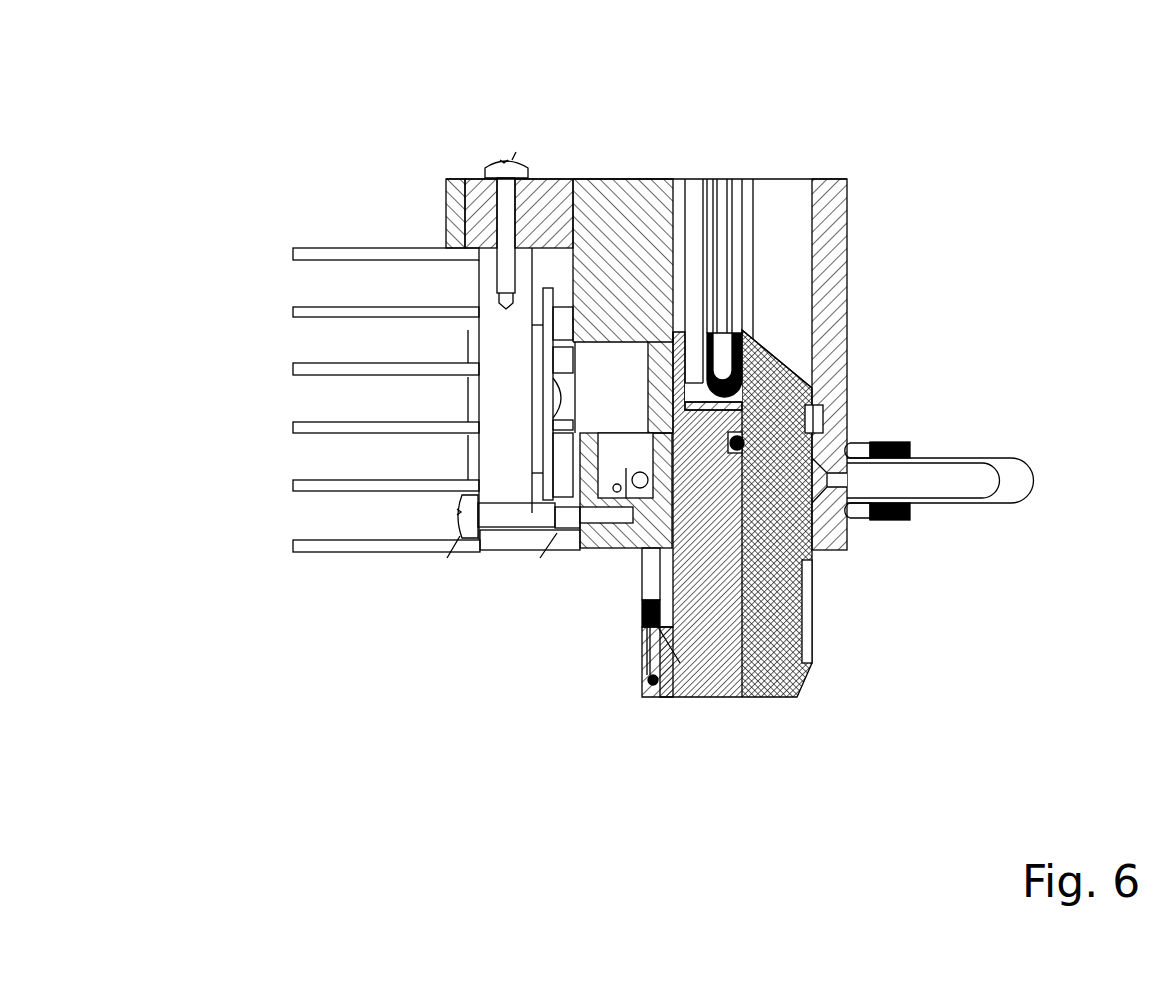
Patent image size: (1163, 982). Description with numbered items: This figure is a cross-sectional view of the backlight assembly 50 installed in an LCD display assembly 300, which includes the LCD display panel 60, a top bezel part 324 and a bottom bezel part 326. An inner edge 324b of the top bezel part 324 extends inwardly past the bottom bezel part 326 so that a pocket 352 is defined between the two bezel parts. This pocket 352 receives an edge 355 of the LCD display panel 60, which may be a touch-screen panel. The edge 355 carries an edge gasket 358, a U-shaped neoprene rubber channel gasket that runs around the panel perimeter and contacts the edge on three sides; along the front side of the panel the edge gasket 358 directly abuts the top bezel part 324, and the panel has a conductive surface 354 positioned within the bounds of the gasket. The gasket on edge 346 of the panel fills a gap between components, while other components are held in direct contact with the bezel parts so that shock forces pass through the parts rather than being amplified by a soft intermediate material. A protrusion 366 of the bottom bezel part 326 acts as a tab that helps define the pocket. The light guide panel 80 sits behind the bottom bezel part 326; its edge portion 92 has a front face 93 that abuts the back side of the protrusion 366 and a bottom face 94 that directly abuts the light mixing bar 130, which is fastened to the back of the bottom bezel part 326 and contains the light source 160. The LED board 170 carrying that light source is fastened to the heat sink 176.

The LCD display assembly 300 is at (950, 88).
The heat sink 176 is at (352, 250).
The light guide panel 80 is at (592, 190).
The protrusion 366 is at (675, 333).
The backlight assembly 50 is at (692, 198).
The LCD display panel 60 is at (723, 218).
The conductive surface 354 is at (735, 283).
The inner edge 324b is at (748, 328).
The edge gasket 358 is at (742, 357).
The edge 355 is at (725, 370).
The edge 346 is at (735, 397).
The pocket 352 is at (815, 394).
The edge portion 92 is at (667, 413).
The LED board 170 is at (550, 462).
The light source 160 is at (636, 484).
The light mixing bar 130 is at (623, 540).
The front face 93 is at (673, 415).
The bottom face 94 is at (665, 438).
The top bezel part 324 is at (780, 672).
The bottom bezel part 326 is at (716, 680).